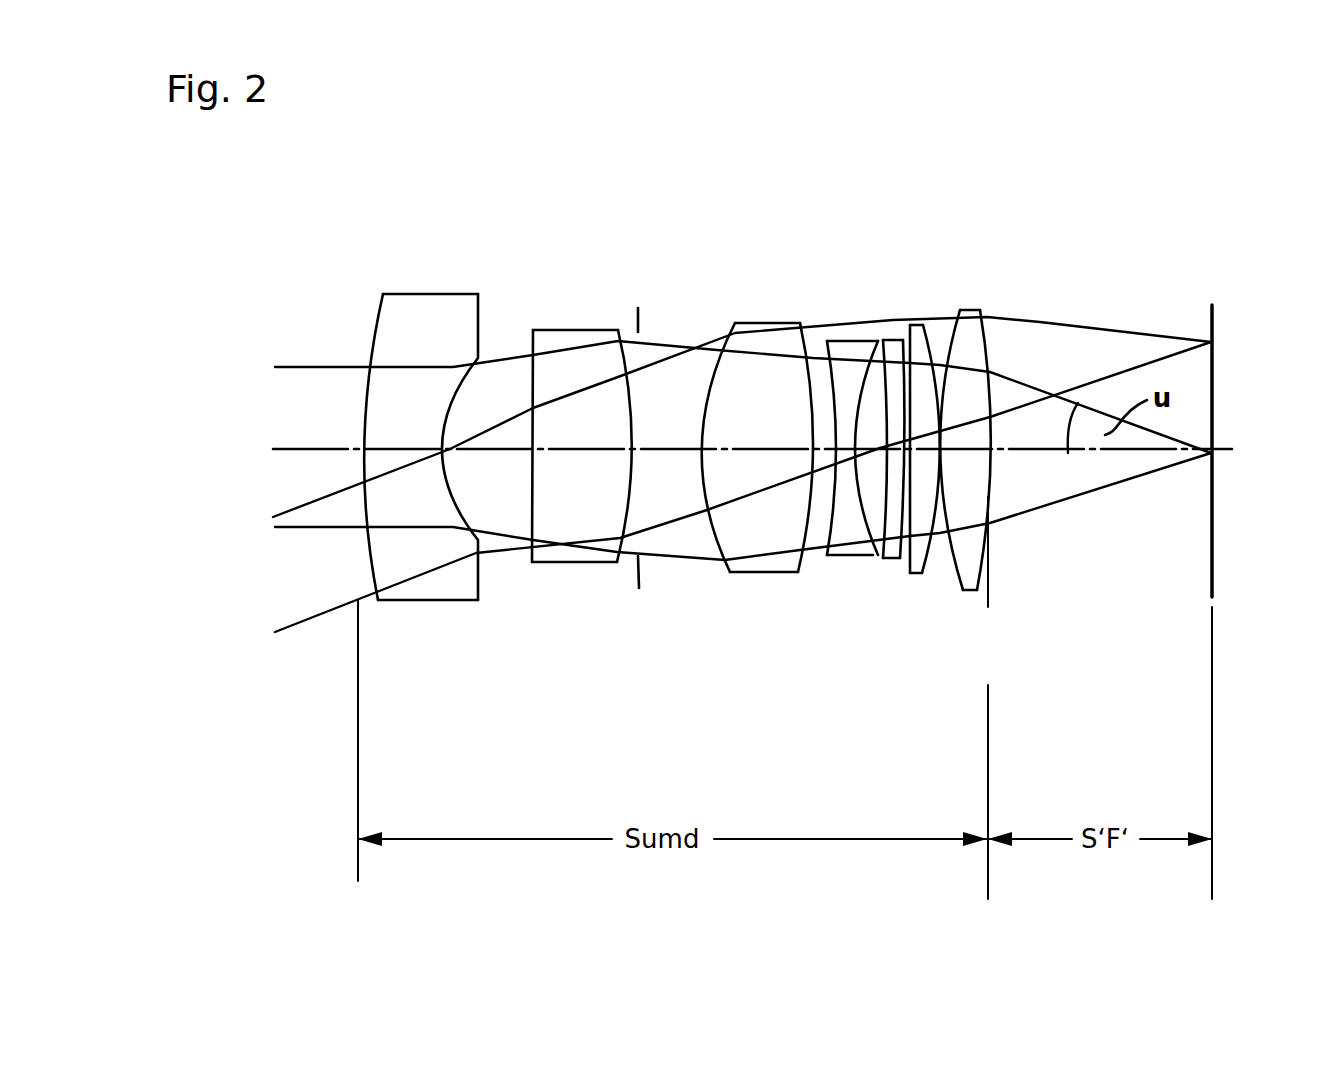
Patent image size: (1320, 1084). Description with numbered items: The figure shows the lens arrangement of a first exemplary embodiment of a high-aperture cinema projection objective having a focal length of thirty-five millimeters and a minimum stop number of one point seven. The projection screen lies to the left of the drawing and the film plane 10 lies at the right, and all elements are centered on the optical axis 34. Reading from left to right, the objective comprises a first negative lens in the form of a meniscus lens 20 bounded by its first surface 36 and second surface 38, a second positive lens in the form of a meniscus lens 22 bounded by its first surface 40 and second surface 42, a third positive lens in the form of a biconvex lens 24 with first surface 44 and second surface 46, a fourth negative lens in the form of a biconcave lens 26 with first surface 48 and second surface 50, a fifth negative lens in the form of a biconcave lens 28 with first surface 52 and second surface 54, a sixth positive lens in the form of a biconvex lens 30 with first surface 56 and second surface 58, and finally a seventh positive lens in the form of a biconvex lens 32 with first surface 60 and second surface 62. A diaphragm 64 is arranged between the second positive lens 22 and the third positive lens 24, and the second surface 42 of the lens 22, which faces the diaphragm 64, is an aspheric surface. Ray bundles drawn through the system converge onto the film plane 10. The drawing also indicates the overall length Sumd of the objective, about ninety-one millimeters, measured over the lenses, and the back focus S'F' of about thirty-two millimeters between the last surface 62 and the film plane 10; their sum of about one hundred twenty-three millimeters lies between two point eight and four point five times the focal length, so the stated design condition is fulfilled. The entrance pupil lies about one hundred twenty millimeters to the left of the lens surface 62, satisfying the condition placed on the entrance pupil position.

The film plane 10 is at (1208, 480).
The first negative lens 20 is at (407, 469).
The second positive lens 22 is at (563, 445).
The third positive lens 24 is at (747, 462).
The fourth negative lens 26 is at (848, 463).
The fifth negative lens 28 is at (904, 471).
The sixth positive lens 30 is at (971, 410).
The seventh positive lens 32 is at (1015, 454).
The optical axis 34 is at (301, 449).
The first surface of the lens 20 36 is at (377, 338).
The second surface of the lens 20 38 is at (458, 345).
The first surface of the lens 22 40 is at (533, 392).
The second surface of the lens 22 42 is at (625, 375).
The first surface of the lens 24 44 is at (728, 355).
The second surface of the lens 24 46 is at (808, 395).
The first surface of the lens 26 48 is at (833, 400).
The second surface of the lens 26 50 is at (878, 415).
The first surface of the lens 28 52 is at (887, 342).
The second surface of the lens 28 54 is at (905, 342).
The first surface of the lens 30 56 is at (915, 328).
The second surface of the lens 30 58 is at (947, 343).
The first surface of the lens 32 60 is at (983, 340).
The second surface of the lens 32 62 is at (989, 358).
The diaphragm 64 is at (633, 575).